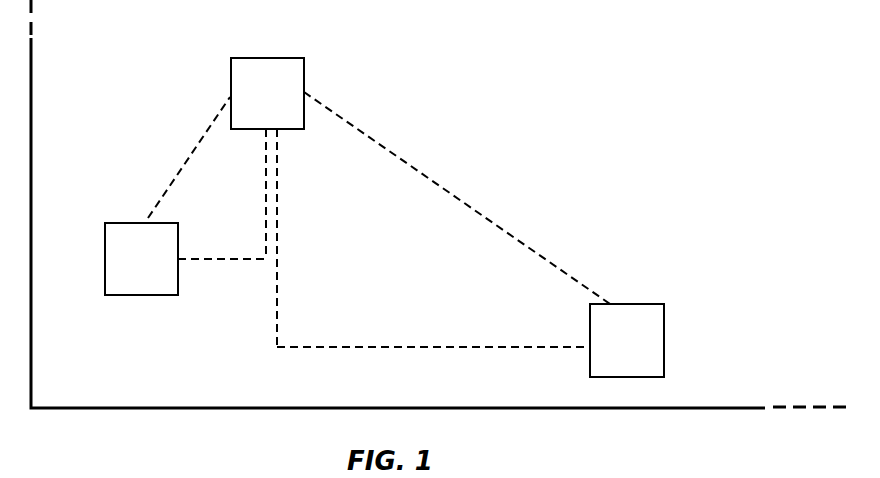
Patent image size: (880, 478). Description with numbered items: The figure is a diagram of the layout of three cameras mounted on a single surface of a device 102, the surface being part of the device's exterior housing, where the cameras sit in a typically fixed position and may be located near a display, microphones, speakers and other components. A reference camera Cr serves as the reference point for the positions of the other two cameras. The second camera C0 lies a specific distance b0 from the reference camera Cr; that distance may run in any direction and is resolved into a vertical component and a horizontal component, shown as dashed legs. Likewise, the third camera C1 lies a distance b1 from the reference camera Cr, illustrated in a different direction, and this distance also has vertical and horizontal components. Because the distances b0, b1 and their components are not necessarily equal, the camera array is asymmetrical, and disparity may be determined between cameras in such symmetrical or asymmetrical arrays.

The device 102 is at (803, 370).
The reference camera Cr is at (267, 93).
The second camera C0 is at (141, 259).
The third camera C1 is at (627, 340).
The distance b0 is at (186, 157).
The distance b1 is at (457, 198).